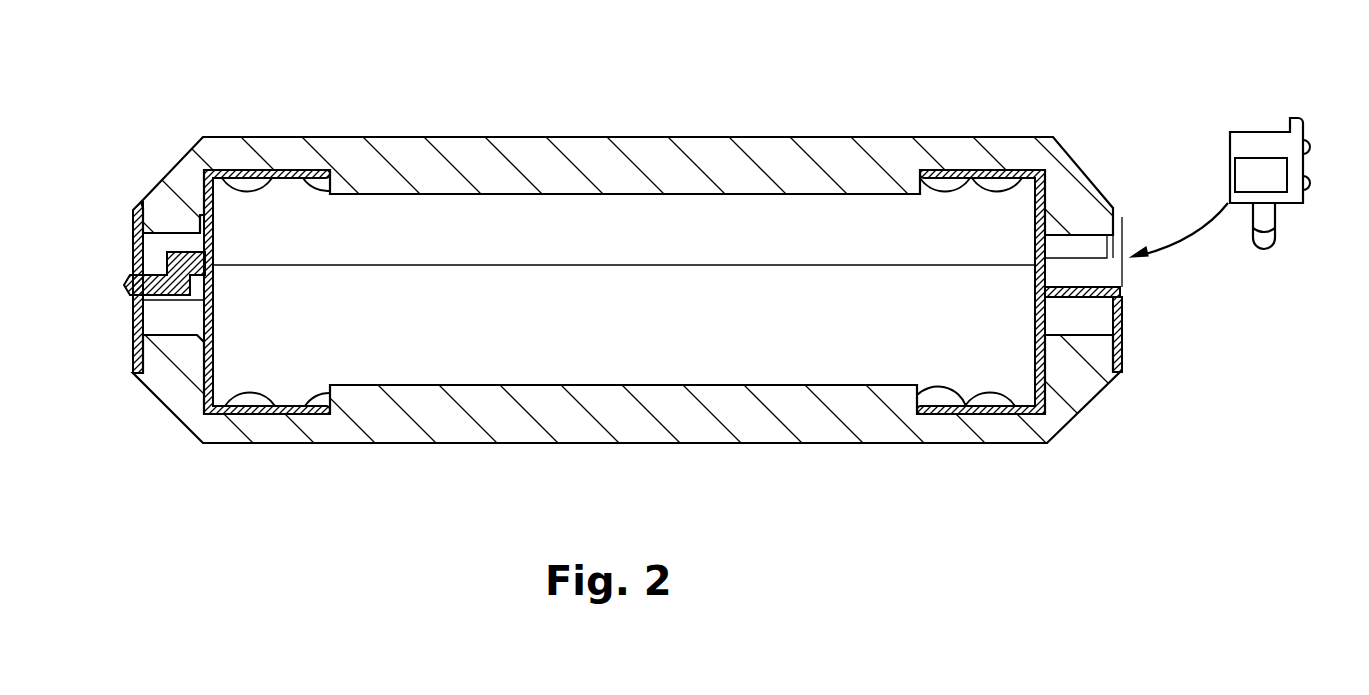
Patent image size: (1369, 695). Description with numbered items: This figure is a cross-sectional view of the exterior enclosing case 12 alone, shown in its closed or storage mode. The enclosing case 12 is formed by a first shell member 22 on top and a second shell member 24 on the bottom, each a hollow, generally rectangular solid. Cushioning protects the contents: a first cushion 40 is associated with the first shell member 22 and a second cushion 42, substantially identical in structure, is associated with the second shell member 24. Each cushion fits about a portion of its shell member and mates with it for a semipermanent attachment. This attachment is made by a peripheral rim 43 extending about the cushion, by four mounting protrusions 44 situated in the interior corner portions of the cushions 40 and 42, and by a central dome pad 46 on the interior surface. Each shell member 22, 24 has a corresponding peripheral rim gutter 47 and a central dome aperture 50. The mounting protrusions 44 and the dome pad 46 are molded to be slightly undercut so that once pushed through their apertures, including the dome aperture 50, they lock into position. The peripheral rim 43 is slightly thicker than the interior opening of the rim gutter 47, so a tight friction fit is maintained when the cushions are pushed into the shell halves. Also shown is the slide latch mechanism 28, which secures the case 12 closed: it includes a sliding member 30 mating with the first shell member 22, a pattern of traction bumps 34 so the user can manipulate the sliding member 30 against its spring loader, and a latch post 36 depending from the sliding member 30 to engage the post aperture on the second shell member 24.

The enclosing case 12 is at (953, 108).
The first shell member 22 is at (1040, 168).
The second shell member 24 is at (1127, 366).
The slide latch mechanism 28 is at (1272, 109).
The sliding member 30 is at (1283, 132).
The traction bumps 34 is at (1312, 147).
The latch post 36 is at (1268, 246).
The first cushion 40 is at (578, 155).
The second cushion 42 is at (530, 444).
The peripheral rim 43 is at (134, 226).
The mounting protrusions 44 is at (268, 184).
The central dome pad 46 is at (619, 196).
The peripheral rim gutter 47 is at (160, 253).
The central dome aperture 50 is at (326, 170).